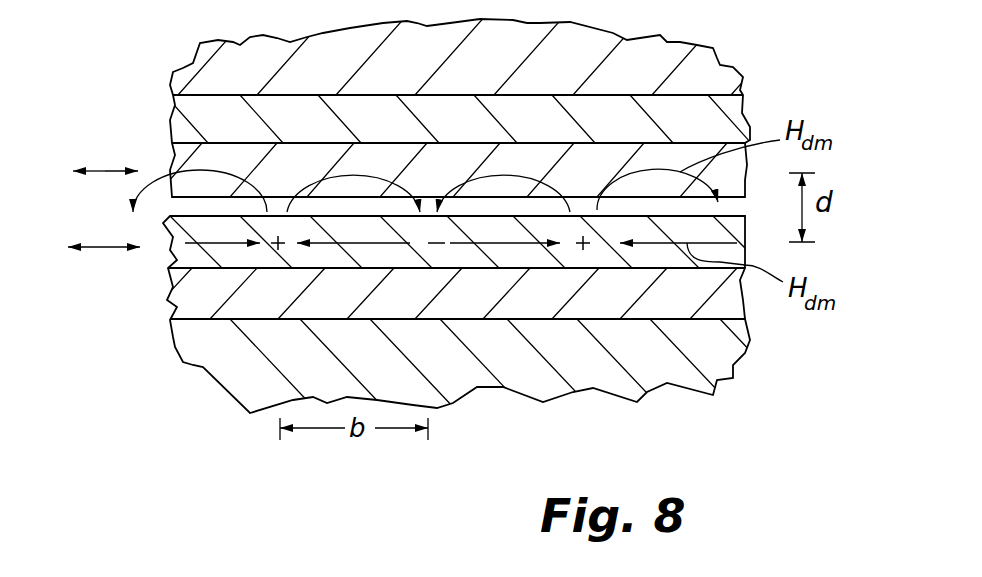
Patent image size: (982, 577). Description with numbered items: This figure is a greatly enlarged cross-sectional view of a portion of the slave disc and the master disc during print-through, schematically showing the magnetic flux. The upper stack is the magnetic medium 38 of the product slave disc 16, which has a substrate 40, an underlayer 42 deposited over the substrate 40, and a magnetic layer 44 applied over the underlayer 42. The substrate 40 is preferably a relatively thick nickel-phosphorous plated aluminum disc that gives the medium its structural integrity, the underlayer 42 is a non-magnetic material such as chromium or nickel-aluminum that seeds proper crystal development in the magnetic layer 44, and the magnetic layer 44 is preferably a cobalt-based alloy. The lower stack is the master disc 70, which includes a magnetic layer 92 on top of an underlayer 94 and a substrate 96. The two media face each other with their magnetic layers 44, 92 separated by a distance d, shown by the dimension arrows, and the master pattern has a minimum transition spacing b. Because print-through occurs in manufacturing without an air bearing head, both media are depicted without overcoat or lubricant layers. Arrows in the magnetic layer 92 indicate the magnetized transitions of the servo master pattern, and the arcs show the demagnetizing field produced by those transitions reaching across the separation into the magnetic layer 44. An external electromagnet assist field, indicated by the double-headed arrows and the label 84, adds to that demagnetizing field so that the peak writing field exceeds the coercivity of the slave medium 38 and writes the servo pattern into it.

The magnetic medium 38 is at (733, 42).
The product slave disc 16 is at (775, 80).
The substrate 40 is at (570, 35).
The underlayer 42 is at (218, 107).
The magnetic layer 44 is at (187, 155).
The external magnetic field 84 is at (105, 247).
The magnetic layer 92 is at (178, 258).
The underlayer 94 is at (177, 305).
The substrate 96 is at (242, 380).
The master disc 70 is at (737, 388).